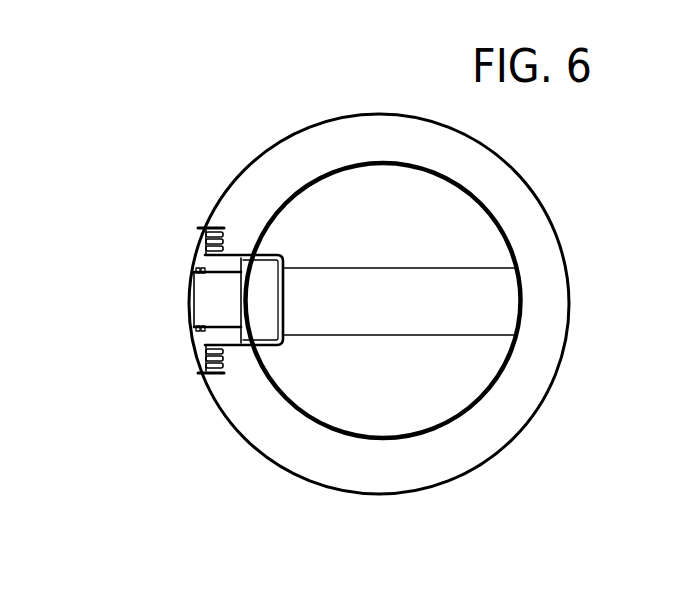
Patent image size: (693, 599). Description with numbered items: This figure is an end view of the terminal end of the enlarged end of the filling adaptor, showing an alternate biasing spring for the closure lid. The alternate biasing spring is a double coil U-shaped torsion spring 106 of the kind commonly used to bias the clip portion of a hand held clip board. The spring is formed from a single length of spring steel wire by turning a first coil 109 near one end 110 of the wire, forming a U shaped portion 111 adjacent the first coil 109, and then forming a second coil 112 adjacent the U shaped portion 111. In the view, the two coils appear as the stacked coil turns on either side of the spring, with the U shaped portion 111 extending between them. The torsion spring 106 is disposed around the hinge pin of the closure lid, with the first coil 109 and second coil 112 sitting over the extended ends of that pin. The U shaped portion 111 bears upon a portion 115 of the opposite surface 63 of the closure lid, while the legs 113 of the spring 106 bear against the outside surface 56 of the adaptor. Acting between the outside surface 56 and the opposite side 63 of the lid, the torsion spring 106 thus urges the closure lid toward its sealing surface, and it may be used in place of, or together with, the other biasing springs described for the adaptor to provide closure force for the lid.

The outside surface 56 is at (334, 113).
The opposite side 63 is at (392, 248).
The torsion spring 106 is at (272, 256).
The first coil 109 is at (222, 378).
The one end 110 is at (203, 378).
The U shaped portion 111 is at (275, 346).
The second coil 112 is at (203, 257).
The legs 113 is at (200, 227).
The portion 115 is at (482, 300).